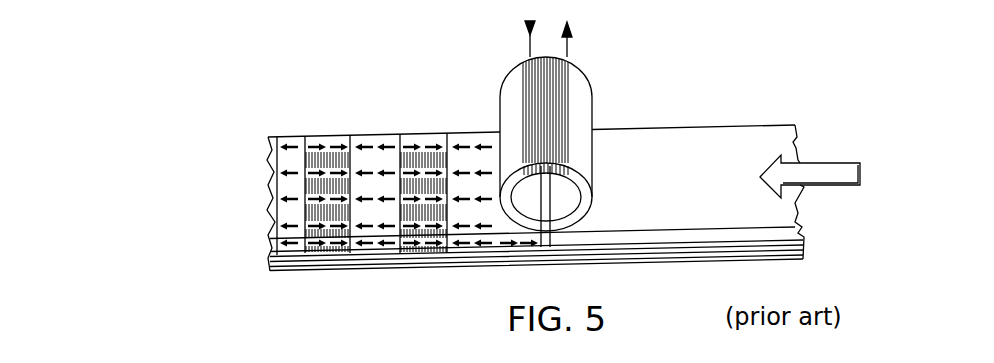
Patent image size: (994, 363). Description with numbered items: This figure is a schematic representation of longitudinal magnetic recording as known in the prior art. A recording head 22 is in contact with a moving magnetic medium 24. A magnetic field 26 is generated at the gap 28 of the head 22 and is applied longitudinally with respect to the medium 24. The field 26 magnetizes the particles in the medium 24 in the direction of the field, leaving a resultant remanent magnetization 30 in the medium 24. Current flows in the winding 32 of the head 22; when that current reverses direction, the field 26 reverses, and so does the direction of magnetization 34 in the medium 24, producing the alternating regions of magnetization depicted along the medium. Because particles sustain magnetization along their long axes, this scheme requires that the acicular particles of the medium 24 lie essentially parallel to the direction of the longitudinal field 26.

The recording head 22 is at (577, 102).
The magnetic medium 24 is at (710, 158).
The magnetic field 26 is at (552, 216).
The gap 28 is at (541, 248).
The remanent magnetization 30 is at (377, 133).
The winding 32 is at (530, 58).
The direction of magnetization 34 is at (322, 140).